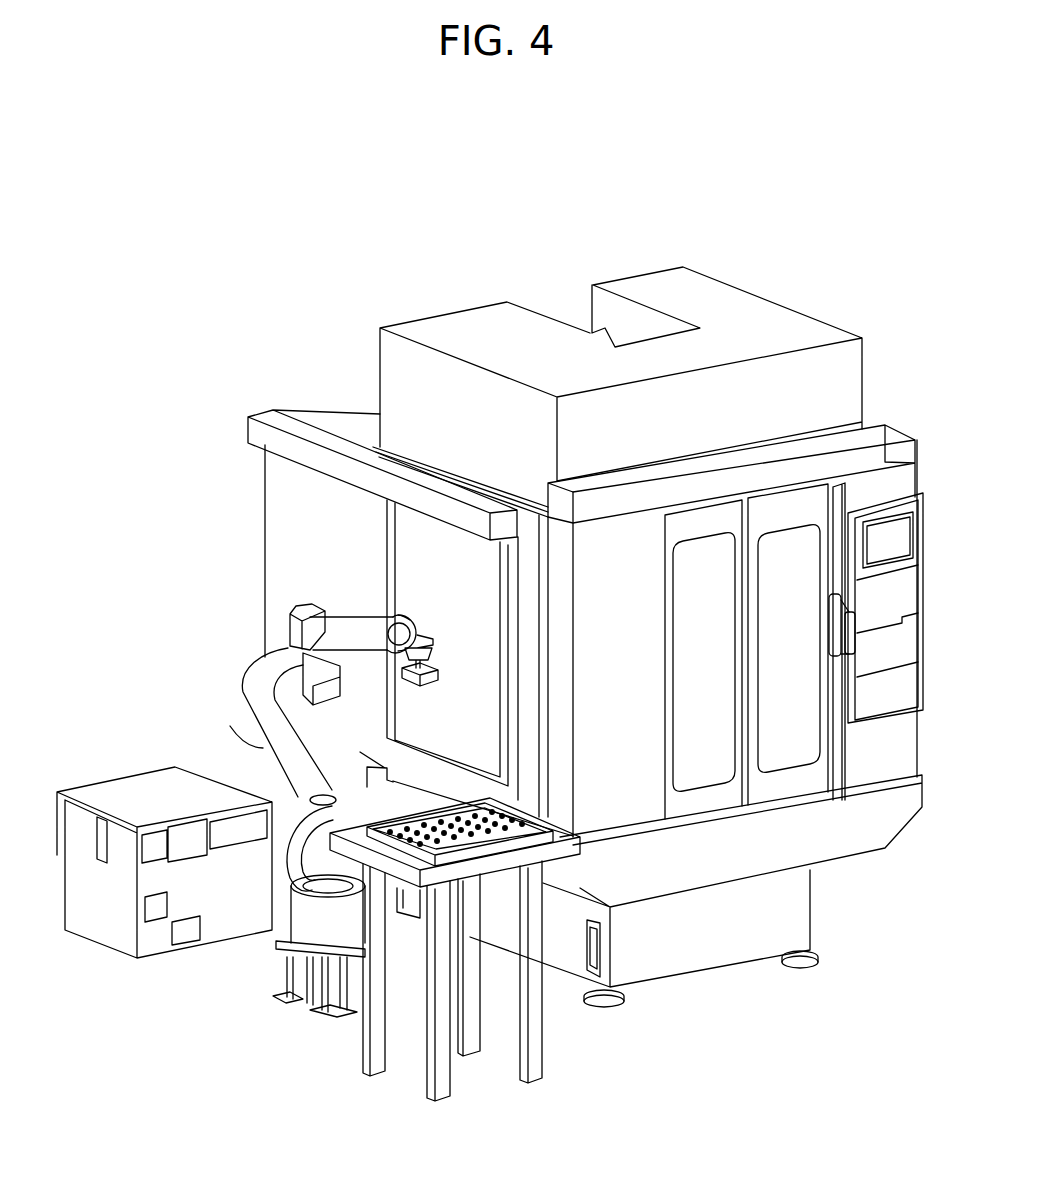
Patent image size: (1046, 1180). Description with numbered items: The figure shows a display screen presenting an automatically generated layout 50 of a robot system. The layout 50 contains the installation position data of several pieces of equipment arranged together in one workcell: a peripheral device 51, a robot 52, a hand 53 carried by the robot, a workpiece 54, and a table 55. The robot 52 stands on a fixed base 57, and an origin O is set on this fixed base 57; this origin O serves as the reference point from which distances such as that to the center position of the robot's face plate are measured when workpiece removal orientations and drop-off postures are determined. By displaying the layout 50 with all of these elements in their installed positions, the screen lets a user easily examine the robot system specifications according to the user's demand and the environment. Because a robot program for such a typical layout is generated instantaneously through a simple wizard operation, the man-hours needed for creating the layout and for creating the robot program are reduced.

The layout 50 is at (829, 172).
The peripheral device 51 is at (838, 389).
The robot 52 is at (270, 743).
The hand 53 is at (440, 688).
The workpiece 54 is at (523, 823).
The table 55 is at (440, 1068).
The fixed base 57 is at (327, 927).
The origin O is at (313, 908).